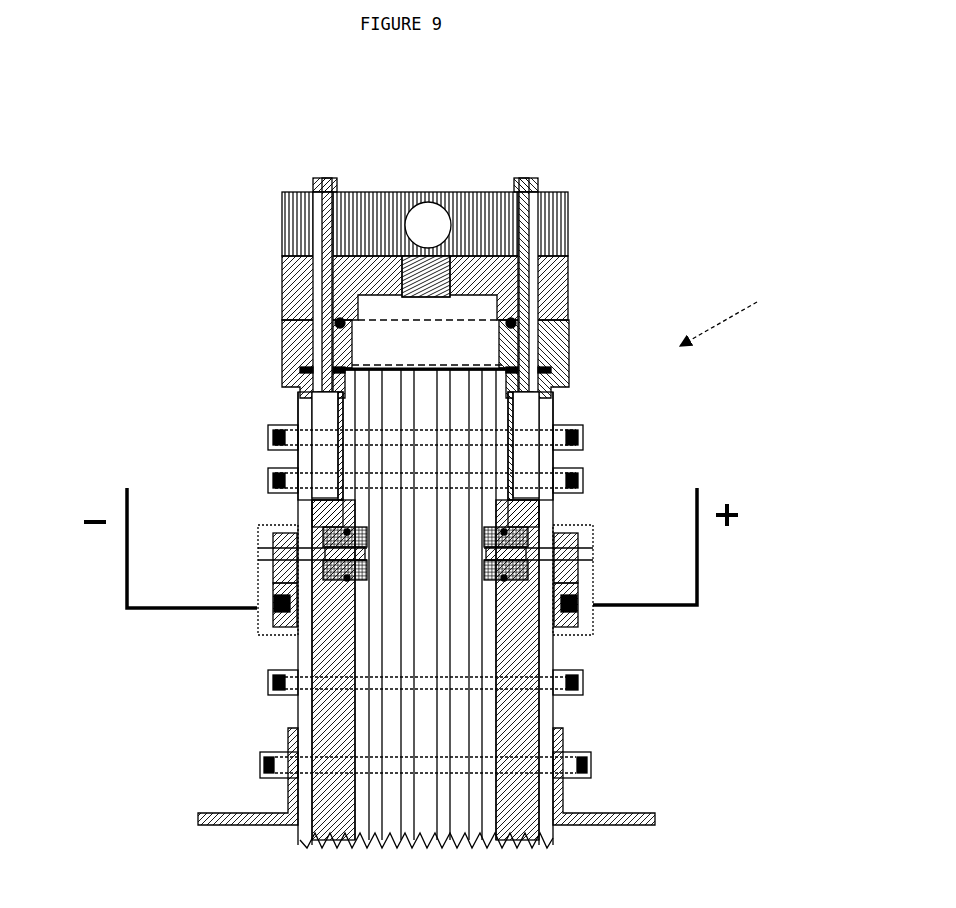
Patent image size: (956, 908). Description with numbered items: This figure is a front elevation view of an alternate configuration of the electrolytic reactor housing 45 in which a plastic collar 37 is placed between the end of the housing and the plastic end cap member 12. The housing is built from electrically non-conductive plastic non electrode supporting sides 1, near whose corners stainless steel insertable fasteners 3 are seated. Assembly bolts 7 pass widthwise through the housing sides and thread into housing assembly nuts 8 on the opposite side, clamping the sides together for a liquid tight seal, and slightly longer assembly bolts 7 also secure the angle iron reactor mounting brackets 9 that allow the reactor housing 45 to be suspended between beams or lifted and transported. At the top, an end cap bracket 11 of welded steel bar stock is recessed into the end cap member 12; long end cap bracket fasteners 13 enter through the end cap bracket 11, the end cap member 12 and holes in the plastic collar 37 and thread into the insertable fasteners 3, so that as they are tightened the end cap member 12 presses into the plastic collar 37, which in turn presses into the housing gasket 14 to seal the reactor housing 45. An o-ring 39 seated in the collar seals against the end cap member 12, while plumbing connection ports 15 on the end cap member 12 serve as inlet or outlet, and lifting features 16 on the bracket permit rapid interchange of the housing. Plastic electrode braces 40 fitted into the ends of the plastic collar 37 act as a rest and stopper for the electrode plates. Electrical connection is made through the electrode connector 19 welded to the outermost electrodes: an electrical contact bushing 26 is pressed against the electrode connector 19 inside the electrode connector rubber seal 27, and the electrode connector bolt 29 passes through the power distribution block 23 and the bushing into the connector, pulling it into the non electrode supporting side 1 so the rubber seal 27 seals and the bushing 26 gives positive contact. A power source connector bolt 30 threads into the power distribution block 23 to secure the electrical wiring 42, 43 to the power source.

The non electrode supporting side 1 is at (520, 712).
The insertable fastener 3 is at (335, 456).
The assembly bolt 7 is at (562, 432).
The housing assembly nut 8 is at (290, 428).
The reactor mounting bracket 9 is at (230, 818).
The end cap bracket 11 is at (300, 208).
The end cap member 12 is at (548, 277).
The end cap bracket fastener 13 is at (322, 180).
The housing gasket 14 is at (300, 368).
The plumbing connection port 15 is at (420, 272).
The lifting feature 16 is at (425, 228).
The electrode connector 19 is at (352, 582).
The power distribution block 23 is at (282, 540).
The electrical contact bushing 26 is at (345, 580).
The electrode connector rubber seal 27 is at (347, 532).
The electrode connector bolt 29 is at (268, 556).
The power source connector bolt 30 is at (268, 602).
The plastic collar 37 is at (302, 340).
The o-ring 39 is at (338, 320).
The electrode brace 40 is at (470, 348).
The electrical wiring 42 is at (127, 582).
The electrical wiring 43 is at (697, 582).
The reactor housing 45 is at (734, 315).